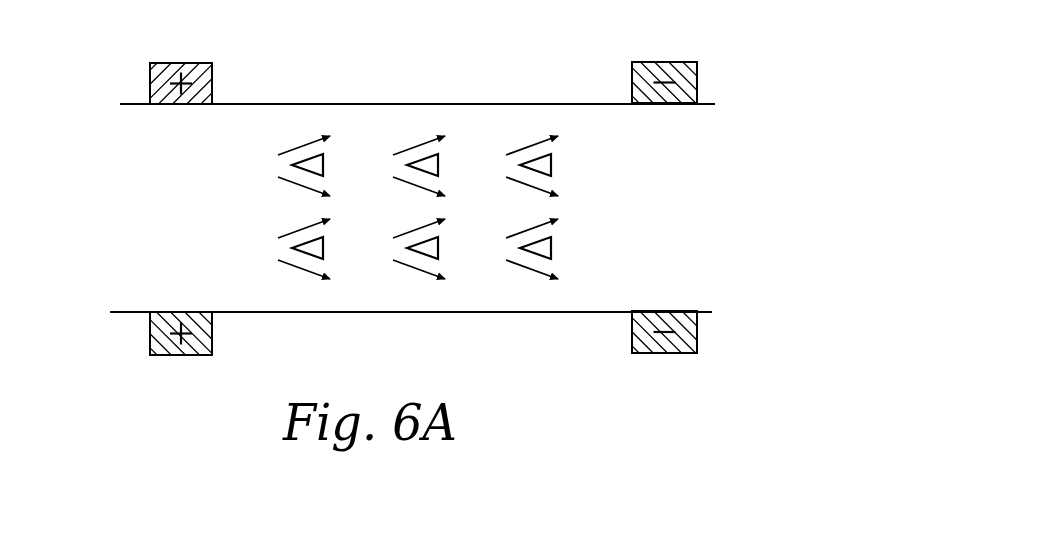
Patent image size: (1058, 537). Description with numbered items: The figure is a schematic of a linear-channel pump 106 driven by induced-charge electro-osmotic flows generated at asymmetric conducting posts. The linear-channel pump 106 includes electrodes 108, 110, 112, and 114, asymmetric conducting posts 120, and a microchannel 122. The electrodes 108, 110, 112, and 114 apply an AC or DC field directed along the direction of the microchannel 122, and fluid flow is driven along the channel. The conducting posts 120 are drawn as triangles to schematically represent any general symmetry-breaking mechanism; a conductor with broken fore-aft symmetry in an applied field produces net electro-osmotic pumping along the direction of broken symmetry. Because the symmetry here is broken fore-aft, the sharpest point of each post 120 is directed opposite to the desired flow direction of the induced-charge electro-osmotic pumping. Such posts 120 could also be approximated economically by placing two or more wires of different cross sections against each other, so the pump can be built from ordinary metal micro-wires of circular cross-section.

The linear-channel pump 106 is at (435, 52).
The electrode 108 is at (184, 63).
The electrode 110 is at (670, 62).
The electrode 112 is at (150, 333).
The electrode 114 is at (697, 340).
The asymmetric conducting posts 120 is at (552, 167).
The microchannel 122 is at (122, 158).